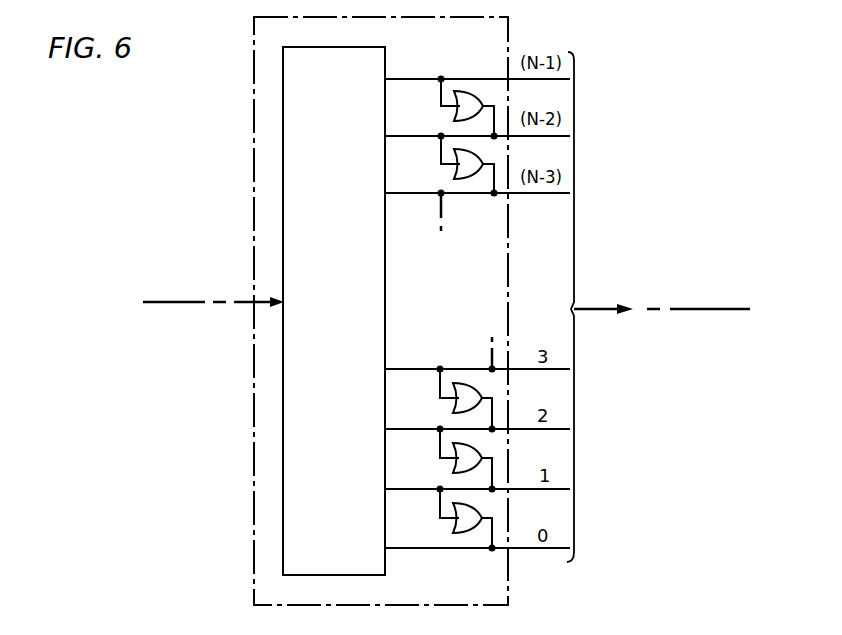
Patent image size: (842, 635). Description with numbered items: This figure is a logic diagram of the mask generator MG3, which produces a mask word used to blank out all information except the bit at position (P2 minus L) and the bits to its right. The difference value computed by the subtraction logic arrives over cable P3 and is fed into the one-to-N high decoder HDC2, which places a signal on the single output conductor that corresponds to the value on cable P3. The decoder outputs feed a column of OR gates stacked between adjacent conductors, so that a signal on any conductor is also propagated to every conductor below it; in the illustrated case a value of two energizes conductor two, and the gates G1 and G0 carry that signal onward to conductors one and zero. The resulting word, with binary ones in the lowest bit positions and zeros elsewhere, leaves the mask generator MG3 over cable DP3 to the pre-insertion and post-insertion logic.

The 1:N decoder HDC2 is at (334, 298).
The mask generator MG3 is at (254, 154).
The cable P3 is at (200, 302).
The cable DP3 is at (685, 309).
The gate G1 is at (454, 465).
The gate G0 is at (455, 526).